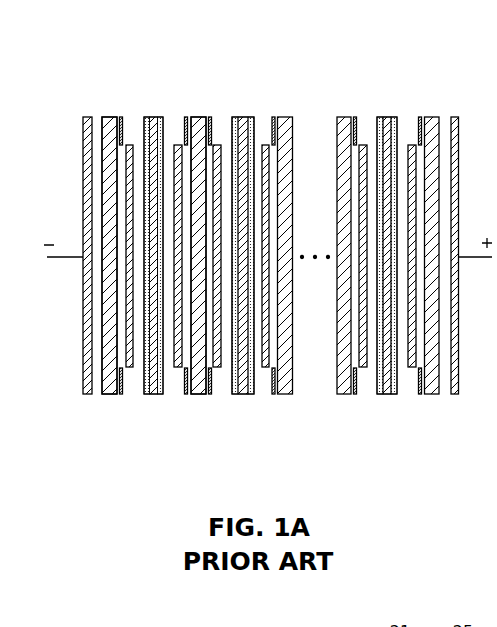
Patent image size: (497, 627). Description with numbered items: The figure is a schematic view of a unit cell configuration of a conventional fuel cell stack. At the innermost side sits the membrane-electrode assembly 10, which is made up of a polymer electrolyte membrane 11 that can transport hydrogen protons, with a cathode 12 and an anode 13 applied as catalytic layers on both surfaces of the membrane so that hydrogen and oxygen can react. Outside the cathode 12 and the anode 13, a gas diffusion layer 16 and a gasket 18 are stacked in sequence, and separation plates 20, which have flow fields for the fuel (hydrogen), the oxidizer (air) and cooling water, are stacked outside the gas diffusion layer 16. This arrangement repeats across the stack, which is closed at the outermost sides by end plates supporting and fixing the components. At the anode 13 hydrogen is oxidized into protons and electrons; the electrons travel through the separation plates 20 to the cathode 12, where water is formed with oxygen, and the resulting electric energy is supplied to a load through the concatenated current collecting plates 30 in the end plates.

The membrane-electrode assembly 10 is at (225, 43).
The polymer electrolyte membrane 11 is at (146, 117).
The cathode 12 is at (177, 145).
The anode 13 is at (130, 145).
The gas diffusion layer 16 is at (116, 117).
The gasket 18 is at (121, 395).
The separation plate 20 is at (109, 394).
The current collecting plate 30 is at (84, 394).